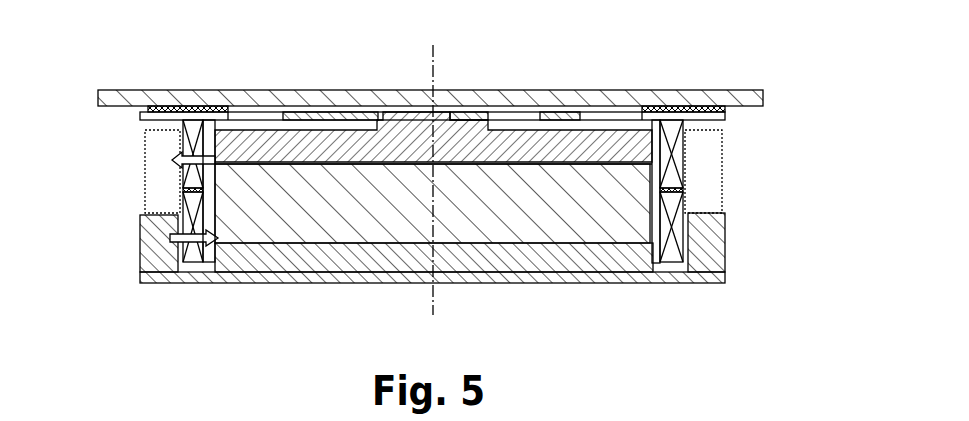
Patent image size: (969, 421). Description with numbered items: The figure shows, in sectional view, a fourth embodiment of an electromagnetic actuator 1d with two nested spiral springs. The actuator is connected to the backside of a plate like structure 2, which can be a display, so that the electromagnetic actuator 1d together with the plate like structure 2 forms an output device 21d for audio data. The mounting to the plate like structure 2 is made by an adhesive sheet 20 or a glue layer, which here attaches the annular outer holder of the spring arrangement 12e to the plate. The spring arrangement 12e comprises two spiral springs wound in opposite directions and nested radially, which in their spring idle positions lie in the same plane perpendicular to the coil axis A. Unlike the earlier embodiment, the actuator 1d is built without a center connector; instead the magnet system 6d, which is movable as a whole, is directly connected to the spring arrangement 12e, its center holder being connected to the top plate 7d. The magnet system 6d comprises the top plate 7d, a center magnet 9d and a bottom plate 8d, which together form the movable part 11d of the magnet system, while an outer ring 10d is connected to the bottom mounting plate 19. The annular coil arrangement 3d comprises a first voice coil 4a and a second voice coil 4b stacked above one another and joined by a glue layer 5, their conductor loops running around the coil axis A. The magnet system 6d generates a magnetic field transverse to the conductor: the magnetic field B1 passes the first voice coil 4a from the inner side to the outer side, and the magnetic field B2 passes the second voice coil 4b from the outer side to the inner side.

The plate like structure 2 is at (192, 95).
The adhesive sheet 20 is at (150, 107).
The spring arrangement 12e is at (548, 112).
The top plate 7d is at (645, 150).
The center magnet 9d is at (635, 203).
The bottom plate 8d is at (637, 252).
The outer ring 10d is at (705, 262).
The bottom mounting plate 19 is at (162, 275).
The annular coil arrangement 3d is at (367, 191).
The first voice coil 4a is at (193, 130).
The glue layer 5 is at (187, 190).
The second voice coil 4b is at (190, 252).
The magnetic field B1 is at (205, 160).
The magnetic field B2 is at (207, 238).
The coil axis A is at (417, 177).
The output device 21d is at (740, 47).
The electromagnetic actuator 1d is at (722, 310).
The movable part of the magnet system 11d is at (812, 130).
The magnet system 6d is at (875, 128).